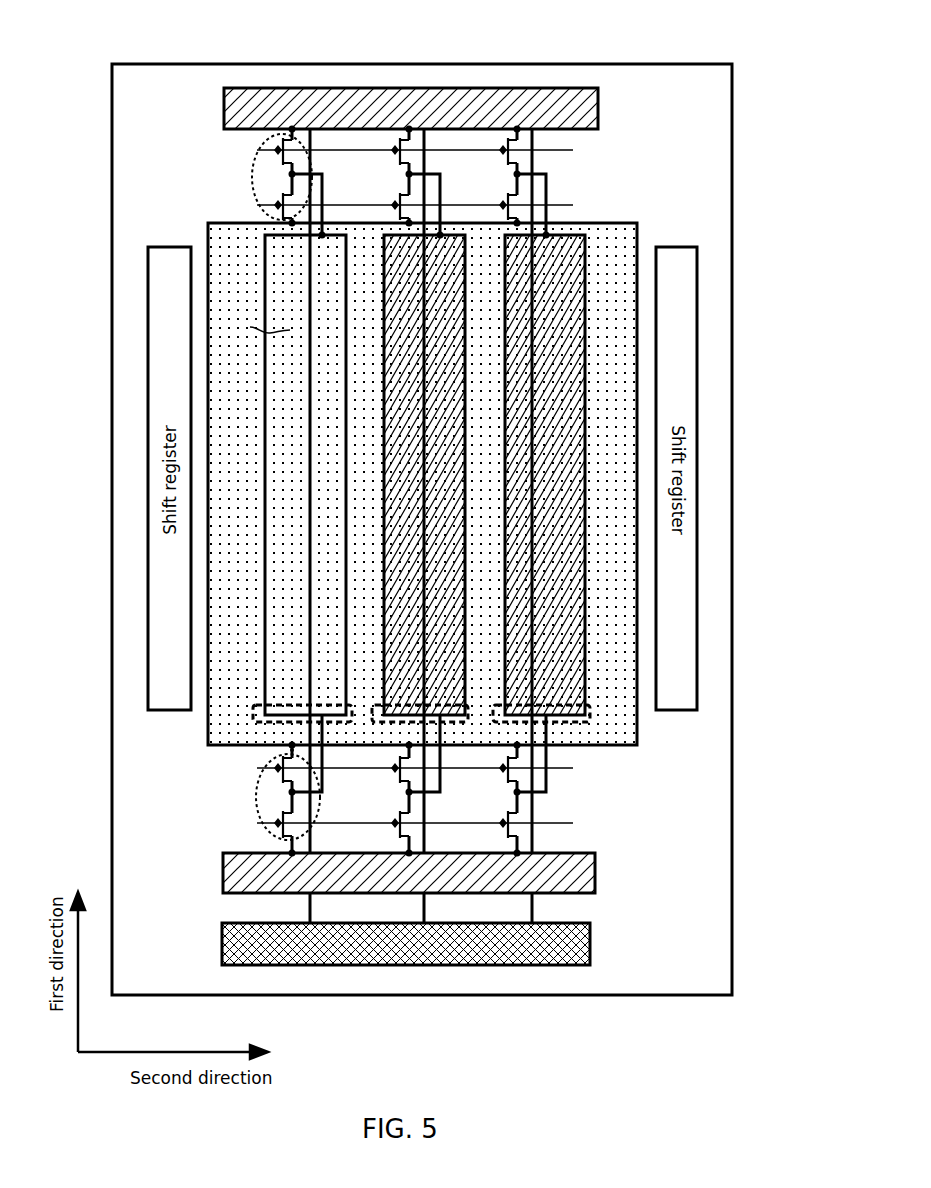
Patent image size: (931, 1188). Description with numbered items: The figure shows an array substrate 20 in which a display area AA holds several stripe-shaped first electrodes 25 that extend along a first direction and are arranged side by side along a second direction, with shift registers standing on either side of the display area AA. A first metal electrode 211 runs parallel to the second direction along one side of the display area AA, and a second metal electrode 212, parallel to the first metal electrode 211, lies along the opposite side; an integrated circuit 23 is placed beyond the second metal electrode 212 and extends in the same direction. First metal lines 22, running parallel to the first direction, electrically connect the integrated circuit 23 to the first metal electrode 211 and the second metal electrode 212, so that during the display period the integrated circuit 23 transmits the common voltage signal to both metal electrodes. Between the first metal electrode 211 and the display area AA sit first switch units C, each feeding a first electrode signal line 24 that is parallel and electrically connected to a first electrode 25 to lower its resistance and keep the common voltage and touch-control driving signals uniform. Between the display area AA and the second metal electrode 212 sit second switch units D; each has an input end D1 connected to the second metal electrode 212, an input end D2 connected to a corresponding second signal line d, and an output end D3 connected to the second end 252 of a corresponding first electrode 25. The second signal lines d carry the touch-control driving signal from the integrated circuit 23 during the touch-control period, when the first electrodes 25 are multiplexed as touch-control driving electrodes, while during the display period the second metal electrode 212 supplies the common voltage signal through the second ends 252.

The array substrate 20 is at (700, 63).
The first metal electrode 211 is at (520, 88).
The second metal electrode 212 is at (596, 887).
The first metal line 22 is at (530, 835).
The integrated circuit 23 is at (553, 967).
The first electrode signal line 24 is at (323, 645).
The first electrode 25 is at (586, 666).
The second end 252 is at (577, 720).
The display area AA is at (616, 222).
The first switch unit C is at (252, 176).
The second switch unit D is at (259, 815).
The input end D1 is at (290, 853).
The input end D2 is at (292, 749).
The output end D3 is at (294, 793).
The second signal line d is at (265, 322).